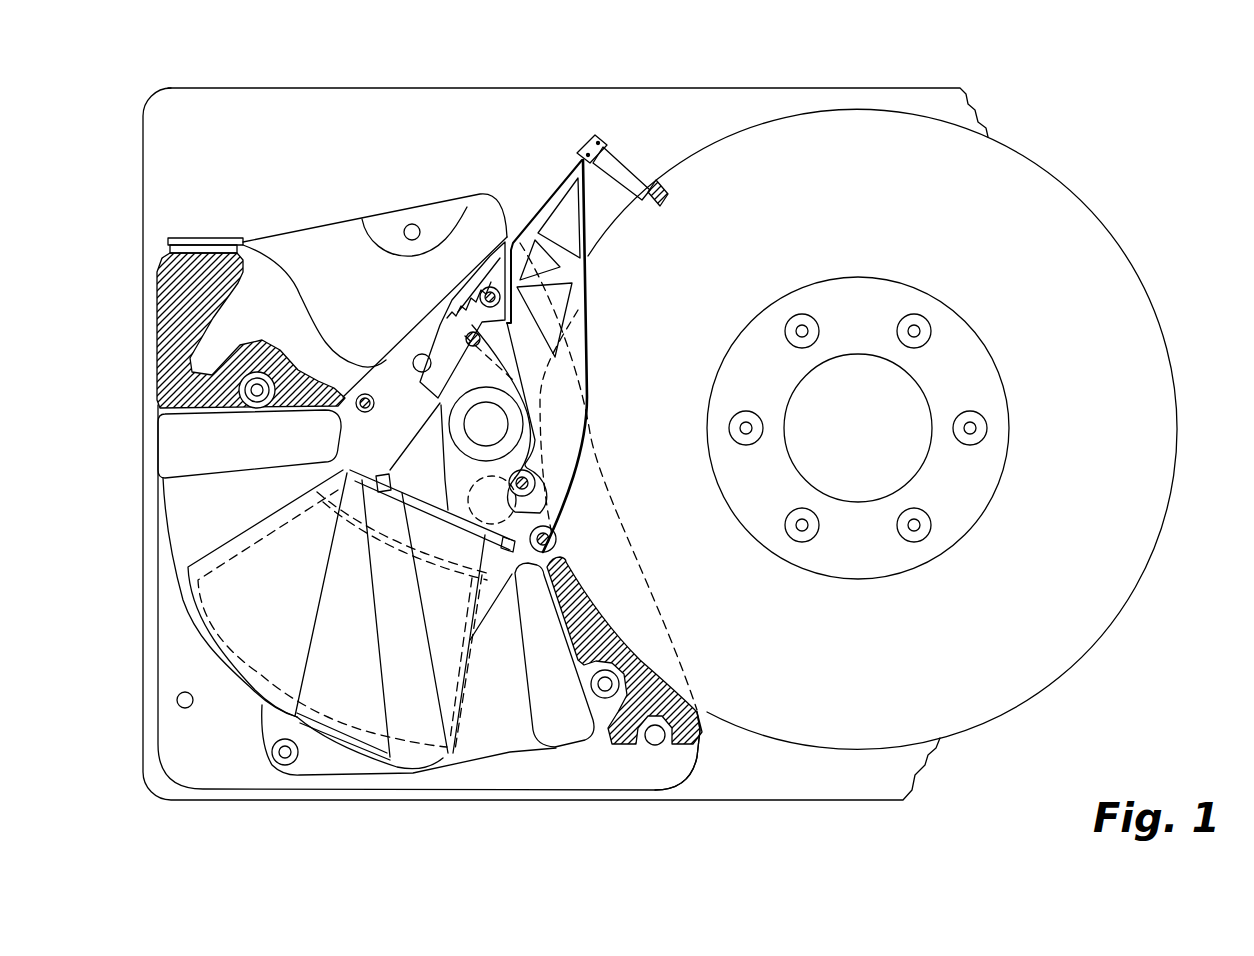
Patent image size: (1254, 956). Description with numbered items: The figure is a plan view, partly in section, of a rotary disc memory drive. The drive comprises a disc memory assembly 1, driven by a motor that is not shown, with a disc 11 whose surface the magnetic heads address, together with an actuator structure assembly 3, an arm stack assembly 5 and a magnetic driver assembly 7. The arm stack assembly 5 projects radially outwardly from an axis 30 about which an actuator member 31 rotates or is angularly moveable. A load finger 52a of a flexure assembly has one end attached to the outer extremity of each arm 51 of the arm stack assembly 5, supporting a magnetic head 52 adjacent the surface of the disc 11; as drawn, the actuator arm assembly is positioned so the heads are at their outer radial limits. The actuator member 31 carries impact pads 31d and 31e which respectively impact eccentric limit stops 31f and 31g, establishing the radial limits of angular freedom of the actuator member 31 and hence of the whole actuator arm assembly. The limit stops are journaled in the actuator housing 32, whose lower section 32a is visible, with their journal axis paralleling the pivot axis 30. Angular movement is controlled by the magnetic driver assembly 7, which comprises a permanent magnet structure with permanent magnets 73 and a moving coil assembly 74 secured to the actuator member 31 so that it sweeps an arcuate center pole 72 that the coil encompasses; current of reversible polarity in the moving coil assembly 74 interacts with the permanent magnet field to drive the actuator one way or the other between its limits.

The disc memory assembly 1 is at (688, 152).
The disc 11 is at (756, 158).
The actuator structure assembly 3 is at (527, 424).
The axis 30 is at (494, 424).
The actuator member 31 is at (438, 404).
The impact pad 31d is at (342, 471).
The impact pad 31e is at (556, 545).
The eccentric limit stop 31f is at (368, 393).
The eccentric limit stop 31g is at (554, 527).
The actuator housing 32 is at (277, 357).
The lower section of actuator housing 32a is at (660, 762).
The arm stack assembly 5 is at (593, 306).
The arm 51 is at (592, 268).
The magnetic head 52 is at (670, 198).
The load finger 52a is at (630, 151).
The magnetic driver assembly 7 is at (532, 610).
The arcuate center pole 72 is at (499, 722).
The permanent magnets 73 is at (236, 657).
The moving coil assembly 74 is at (328, 733).